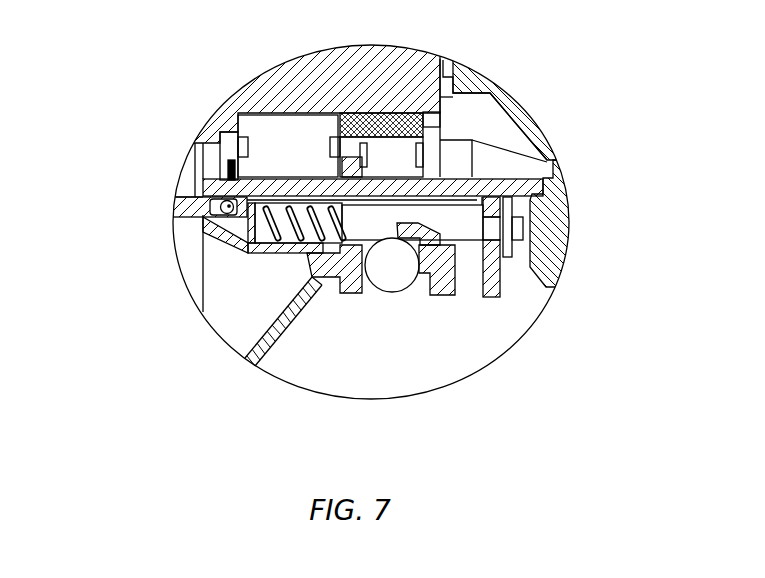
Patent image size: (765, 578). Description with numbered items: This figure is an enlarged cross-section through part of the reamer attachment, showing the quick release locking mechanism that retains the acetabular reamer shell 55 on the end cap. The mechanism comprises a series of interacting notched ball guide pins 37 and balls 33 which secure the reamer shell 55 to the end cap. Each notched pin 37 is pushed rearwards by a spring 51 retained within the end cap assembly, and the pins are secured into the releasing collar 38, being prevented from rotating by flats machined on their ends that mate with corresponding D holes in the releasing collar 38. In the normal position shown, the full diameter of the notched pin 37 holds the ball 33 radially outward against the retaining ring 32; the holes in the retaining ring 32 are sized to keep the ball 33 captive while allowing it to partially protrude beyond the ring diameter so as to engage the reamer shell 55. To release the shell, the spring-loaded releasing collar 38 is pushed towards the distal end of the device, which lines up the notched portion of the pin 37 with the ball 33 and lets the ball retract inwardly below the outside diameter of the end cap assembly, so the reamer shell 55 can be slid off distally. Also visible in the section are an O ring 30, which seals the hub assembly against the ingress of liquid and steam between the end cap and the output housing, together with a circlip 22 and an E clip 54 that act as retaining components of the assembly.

The circlip 22 is at (229, 167).
The O ring 30 is at (203, 215).
The spring 51 is at (257, 207).
The retaining ring 32 is at (237, 347).
The reamer shell 55 is at (279, 340).
The ball 33 is at (388, 270).
The ball guide pin 37 is at (462, 222).
The releasing collar 38 is at (490, 267).
The E clip 54 is at (510, 208).